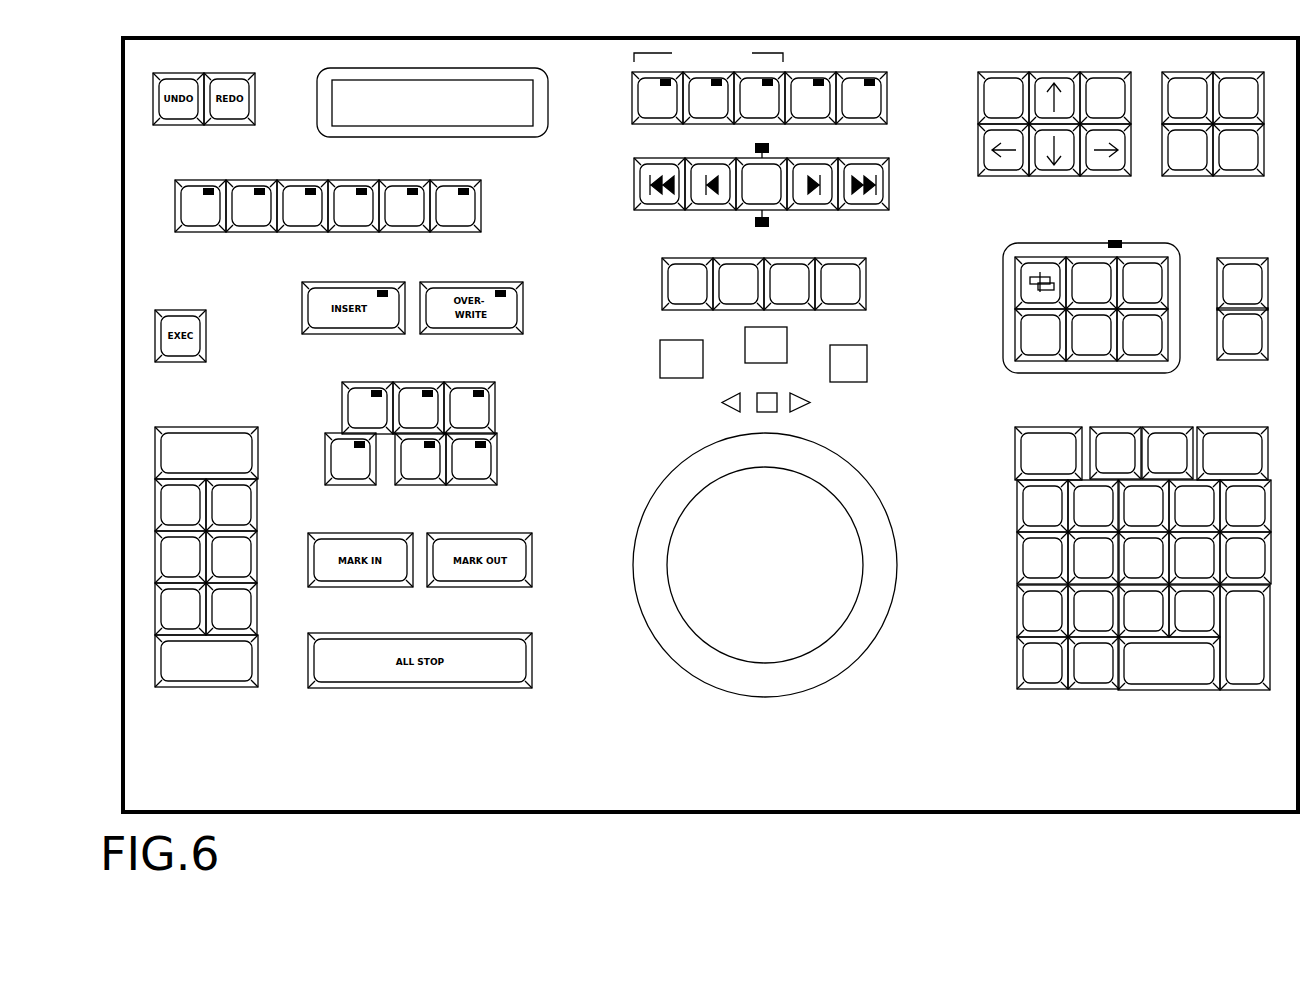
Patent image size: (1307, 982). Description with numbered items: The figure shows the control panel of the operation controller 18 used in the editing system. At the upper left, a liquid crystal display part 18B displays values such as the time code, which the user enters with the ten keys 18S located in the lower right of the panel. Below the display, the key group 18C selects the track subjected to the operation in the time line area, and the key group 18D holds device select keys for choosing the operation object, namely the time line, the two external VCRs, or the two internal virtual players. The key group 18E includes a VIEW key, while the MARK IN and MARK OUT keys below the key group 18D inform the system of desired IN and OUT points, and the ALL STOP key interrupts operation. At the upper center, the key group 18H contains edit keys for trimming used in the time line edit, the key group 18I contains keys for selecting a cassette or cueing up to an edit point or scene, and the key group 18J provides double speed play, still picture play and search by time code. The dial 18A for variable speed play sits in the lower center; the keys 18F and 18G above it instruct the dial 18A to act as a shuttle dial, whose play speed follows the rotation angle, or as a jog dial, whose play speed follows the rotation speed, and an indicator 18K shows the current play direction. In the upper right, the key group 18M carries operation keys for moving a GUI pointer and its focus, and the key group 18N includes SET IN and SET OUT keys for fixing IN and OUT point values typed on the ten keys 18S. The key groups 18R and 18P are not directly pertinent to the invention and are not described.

The operation controller 18 is at (1190, 38).
The dial 18A is at (878, 487).
The liquid crystal display part 18B is at (512, 66).
The key group 18C is at (488, 182).
The key group 18D is at (508, 384).
The key group 18E is at (192, 410).
The key 18F is at (660, 357).
The key 18G is at (745, 350).
The key group 18H is at (893, 87).
The key group 18I is at (893, 167).
The key group 18J is at (878, 262).
The indicator 18K is at (828, 403).
The key group 18M is at (1058, 180).
The key group 18N is at (1000, 298).
The key group 18P is at (1230, 258).
The key group 18R is at (1222, 180).
The ten keys 18S is at (1108, 424).